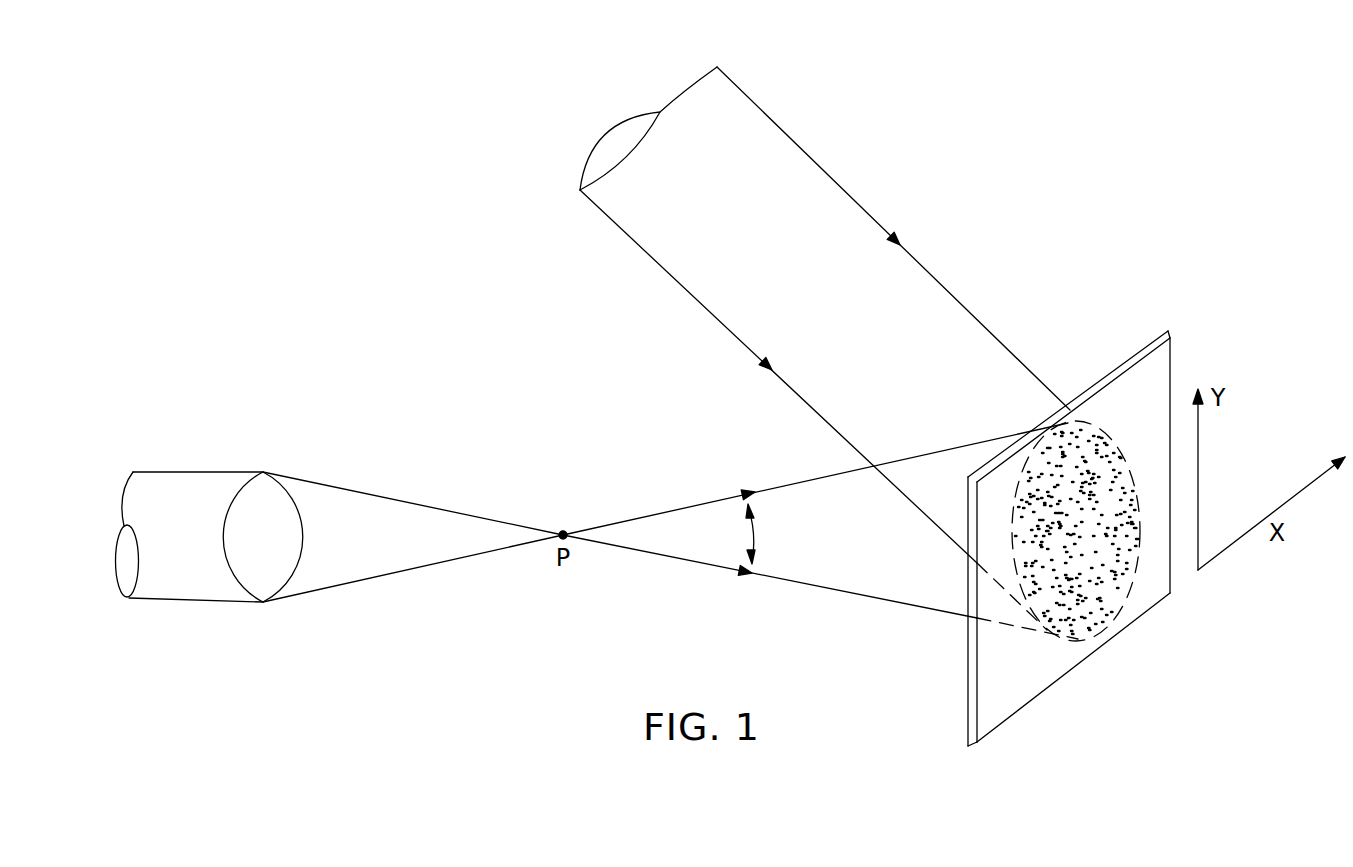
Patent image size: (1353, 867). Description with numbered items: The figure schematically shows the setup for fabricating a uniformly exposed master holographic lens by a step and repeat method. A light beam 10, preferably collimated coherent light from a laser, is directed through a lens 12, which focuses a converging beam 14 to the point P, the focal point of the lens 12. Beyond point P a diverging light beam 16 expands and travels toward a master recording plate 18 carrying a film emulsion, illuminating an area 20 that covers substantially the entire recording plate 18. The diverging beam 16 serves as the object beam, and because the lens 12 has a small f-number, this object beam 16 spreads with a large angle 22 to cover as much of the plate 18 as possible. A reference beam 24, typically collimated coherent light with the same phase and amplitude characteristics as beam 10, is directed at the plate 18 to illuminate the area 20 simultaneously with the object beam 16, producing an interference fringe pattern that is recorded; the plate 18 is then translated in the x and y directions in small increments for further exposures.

The light beam 10 is at (183, 483).
The lens 12 is at (263, 474).
The converging beam 14 is at (404, 502).
The diverging light beam 16 is at (813, 588).
The master recording plate 18 is at (1057, 682).
The area 20 is at (1102, 627).
The angle 22 is at (768, 534).
The reference beam 24 is at (763, 110).